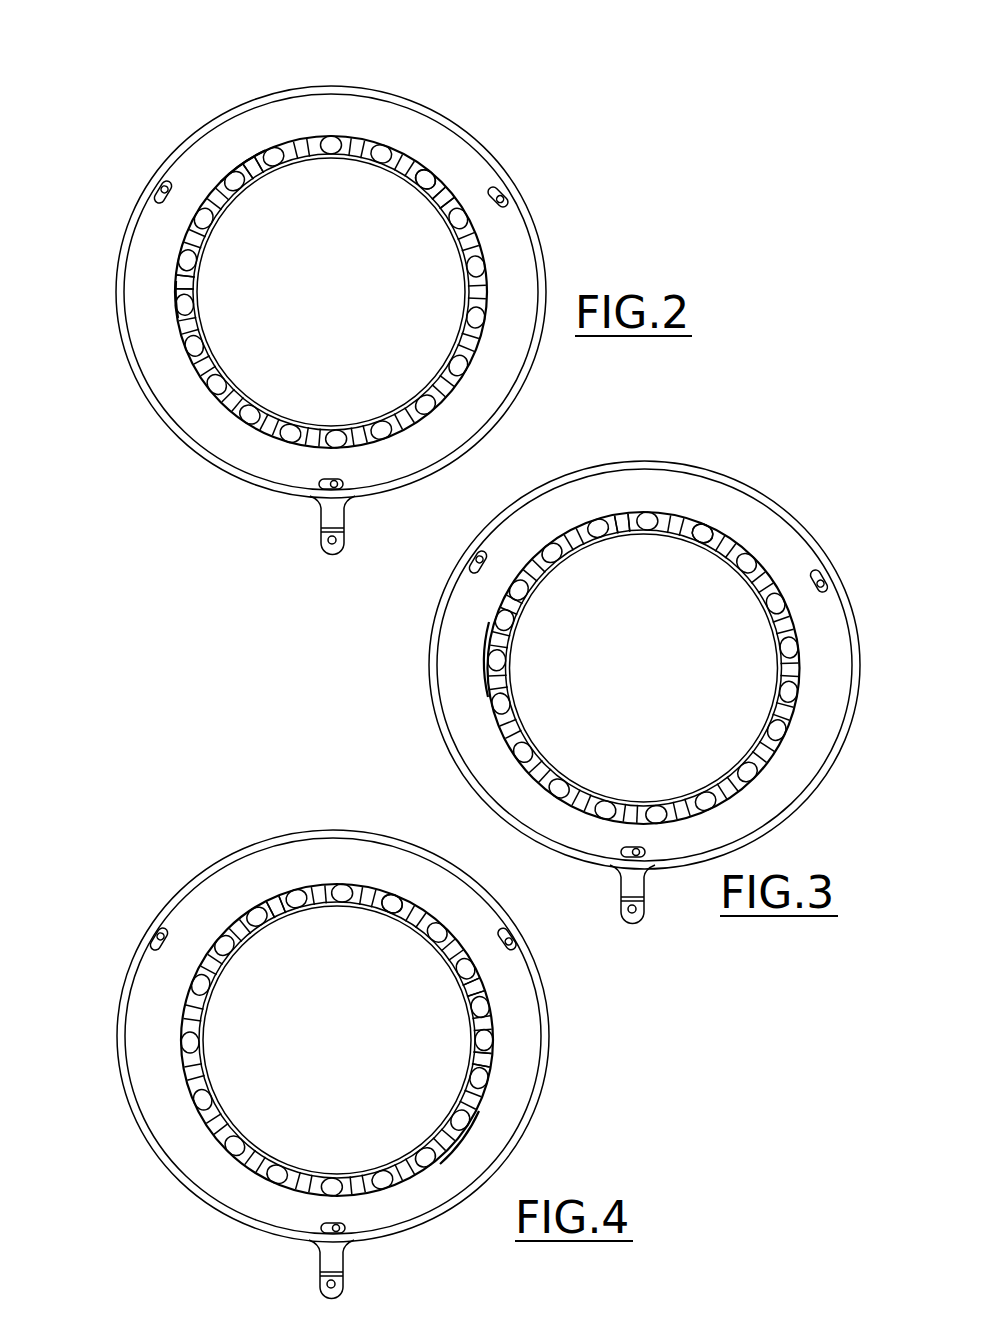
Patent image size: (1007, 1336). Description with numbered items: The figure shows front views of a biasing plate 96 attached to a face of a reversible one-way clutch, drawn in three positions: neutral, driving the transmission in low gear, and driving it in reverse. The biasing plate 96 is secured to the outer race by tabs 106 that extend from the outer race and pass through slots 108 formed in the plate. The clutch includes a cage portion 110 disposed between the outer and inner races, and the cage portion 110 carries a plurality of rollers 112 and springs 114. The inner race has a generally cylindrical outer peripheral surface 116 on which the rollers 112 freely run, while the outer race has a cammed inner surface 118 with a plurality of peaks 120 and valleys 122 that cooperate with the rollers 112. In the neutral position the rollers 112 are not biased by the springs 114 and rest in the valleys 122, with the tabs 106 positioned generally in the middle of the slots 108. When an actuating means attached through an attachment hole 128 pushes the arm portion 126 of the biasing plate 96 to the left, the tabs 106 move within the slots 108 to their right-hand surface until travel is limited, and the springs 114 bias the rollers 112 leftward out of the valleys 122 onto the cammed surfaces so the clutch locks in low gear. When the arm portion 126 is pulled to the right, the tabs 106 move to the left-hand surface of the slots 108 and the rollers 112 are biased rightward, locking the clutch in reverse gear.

In FIG. 2, the biasing plate 96 is at (540, 195).
In FIG. 3, the biasing plate 96 is at (767, 490).
In FIG. 4, the biasing plate 96 is at (188, 872).
In FIG. 2, the tabs 106 is at (330, 486).
In FIG. 3, the tabs 106 is at (818, 574).
In FIG. 2, the slots 108 is at (173, 180).
In FIG. 3, the slots 108 is at (480, 556).
In FIG. 4, the slots 108 is at (507, 935).
In FIG. 2, the cage portion 110 is at (365, 138).
In FIG. 3, the cage portion 110 is at (666, 514).
In FIG. 4, the cage portion 110 is at (327, 886).
In FIG. 2, the rollers 112 is at (433, 174).
In FIG. 3, the rollers 112 is at (703, 530).
In FIG. 4, the rollers 112 is at (395, 903).
In FIG. 2, the springs 114 is at (452, 194).
In FIG. 3, the springs 114 is at (622, 522).
In FIG. 4, the springs 114 is at (266, 897).
In FIG. 2, the outer peripheral surface 116 is at (243, 165).
In FIG. 2, the inner surface 118 is at (263, 160).
In FIG. 2, the peaks 120 is at (176, 290).
In FIG. 4, the peaks 120 is at (488, 1097).
In FIG. 2, the valleys 122 is at (174, 317).
In FIG. 3, the valleys 122 is at (487, 681).
In FIG. 4, the valleys 122 is at (430, 1167).
In FIG. 2, the arm portion 126 is at (330, 513).
In FIG. 3, the arm portion 126 is at (645, 893).
In FIG. 4, the arm portion 126 is at (334, 1259).
In FIG. 2, the attachment hole 128 is at (332, 545).
In FIG. 3, the attachment hole 128 is at (632, 915).
In FIG. 4, the attachment hole 128 is at (328, 1283).